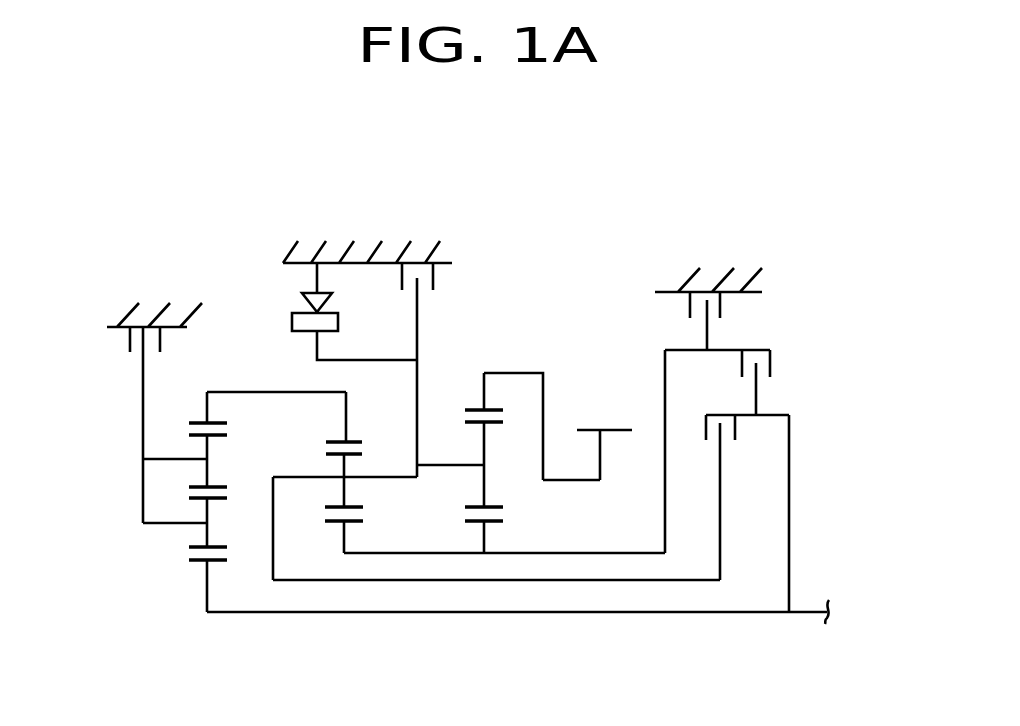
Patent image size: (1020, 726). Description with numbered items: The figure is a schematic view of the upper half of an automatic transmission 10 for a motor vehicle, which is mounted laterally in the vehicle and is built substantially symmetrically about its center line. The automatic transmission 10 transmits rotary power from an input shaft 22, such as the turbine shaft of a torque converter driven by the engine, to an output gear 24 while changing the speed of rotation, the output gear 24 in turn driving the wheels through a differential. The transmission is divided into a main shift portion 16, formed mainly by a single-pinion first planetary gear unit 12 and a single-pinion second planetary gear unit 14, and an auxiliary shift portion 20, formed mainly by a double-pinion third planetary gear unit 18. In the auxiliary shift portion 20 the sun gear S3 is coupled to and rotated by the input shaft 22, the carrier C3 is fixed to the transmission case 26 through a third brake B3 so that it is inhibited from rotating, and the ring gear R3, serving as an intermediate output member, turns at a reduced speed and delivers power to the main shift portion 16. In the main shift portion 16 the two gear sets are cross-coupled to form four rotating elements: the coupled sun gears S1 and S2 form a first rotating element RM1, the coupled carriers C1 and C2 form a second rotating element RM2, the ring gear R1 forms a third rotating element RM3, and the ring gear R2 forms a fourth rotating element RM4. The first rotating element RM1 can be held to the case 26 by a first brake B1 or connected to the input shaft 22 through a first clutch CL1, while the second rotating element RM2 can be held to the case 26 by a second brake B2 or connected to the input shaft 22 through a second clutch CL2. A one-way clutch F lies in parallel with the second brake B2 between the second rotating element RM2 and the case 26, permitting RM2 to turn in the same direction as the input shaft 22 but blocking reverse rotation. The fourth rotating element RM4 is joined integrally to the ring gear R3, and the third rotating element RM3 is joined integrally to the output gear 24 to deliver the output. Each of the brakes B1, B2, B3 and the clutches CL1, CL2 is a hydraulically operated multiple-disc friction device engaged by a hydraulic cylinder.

The automatic transmission 10 is at (628, 222).
The first planetary gear unit 12 is at (493, 347).
The second planetary gear unit 14 is at (350, 578).
The main shift portion 16 is at (242, 228).
The third planetary gear unit 18 is at (228, 352).
The auxiliary shift portion 20 is at (218, 616).
The input shaft 22 is at (793, 612).
The output gear 24 is at (590, 430).
The transmission case 26 is at (160, 310).
The first brake B1 is at (684, 321).
The second brake B2 is at (440, 278).
The third brake B3 is at (107, 344).
The one-way clutch F is at (345, 311).
The first clutch CL1 is at (755, 448).
The second clutch CL2 is at (748, 497).
The carrier C1 is at (444, 465).
The carrier C2 is at (373, 482).
The carrier C3 is at (142, 475).
The ring gear R1 is at (476, 408).
The ring gear R2 is at (344, 440).
The ring gear R3 is at (200, 420).
The sun gear S1 is at (488, 522).
The sun gear S2 is at (348, 522).
The sun gear S3 is at (200, 563).
The first rotating element RM1 is at (563, 553).
The second rotating element RM2 is at (272, 505).
The third rotating element RM3 is at (523, 373).
The fourth rotating element RM4 is at (390, 392).